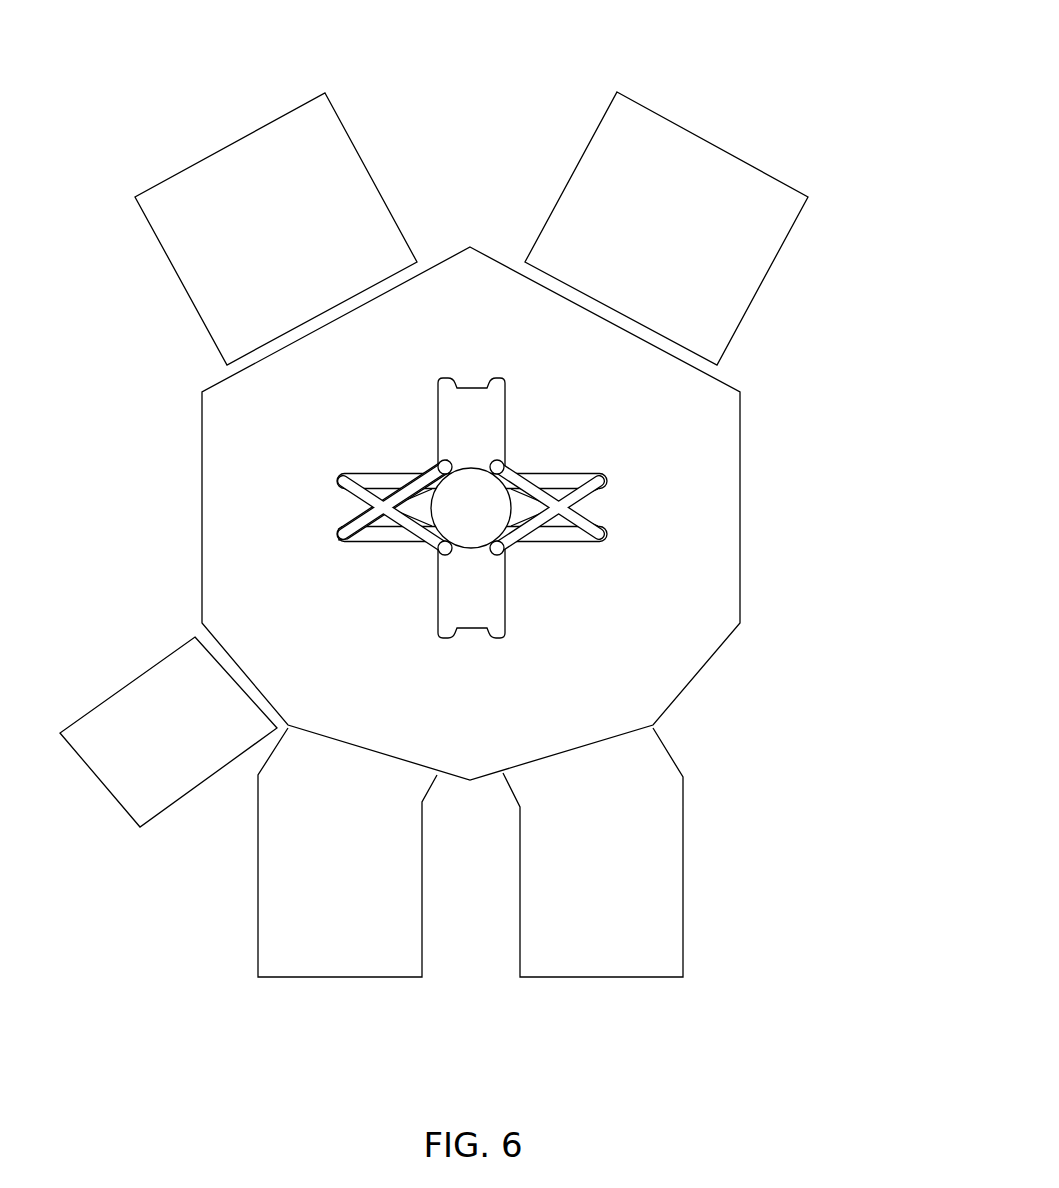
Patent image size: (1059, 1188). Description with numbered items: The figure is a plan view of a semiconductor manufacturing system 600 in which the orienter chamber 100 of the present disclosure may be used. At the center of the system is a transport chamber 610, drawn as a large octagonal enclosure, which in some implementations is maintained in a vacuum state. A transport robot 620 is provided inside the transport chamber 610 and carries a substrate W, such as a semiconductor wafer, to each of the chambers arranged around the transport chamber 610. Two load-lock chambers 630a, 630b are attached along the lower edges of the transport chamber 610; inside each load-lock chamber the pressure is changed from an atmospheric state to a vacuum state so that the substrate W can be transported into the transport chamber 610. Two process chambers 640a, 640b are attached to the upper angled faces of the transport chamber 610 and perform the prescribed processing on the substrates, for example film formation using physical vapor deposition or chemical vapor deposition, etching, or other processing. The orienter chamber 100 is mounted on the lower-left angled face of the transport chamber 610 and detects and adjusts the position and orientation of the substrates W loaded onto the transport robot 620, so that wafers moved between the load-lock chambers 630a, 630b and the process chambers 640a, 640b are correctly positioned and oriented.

The semiconductor manufacturing system 600 is at (773, 93).
The transport chamber 610 is at (696, 678).
The transport robot 620 is at (481, 508).
The load-lock chamber 630a is at (316, 886).
The load-lock chamber 630b is at (583, 886).
The process chamber 640a is at (260, 243).
The process chamber 640b is at (695, 243).
The orienter chamber 100 is at (146, 745).
The substrate W is at (483, 523).